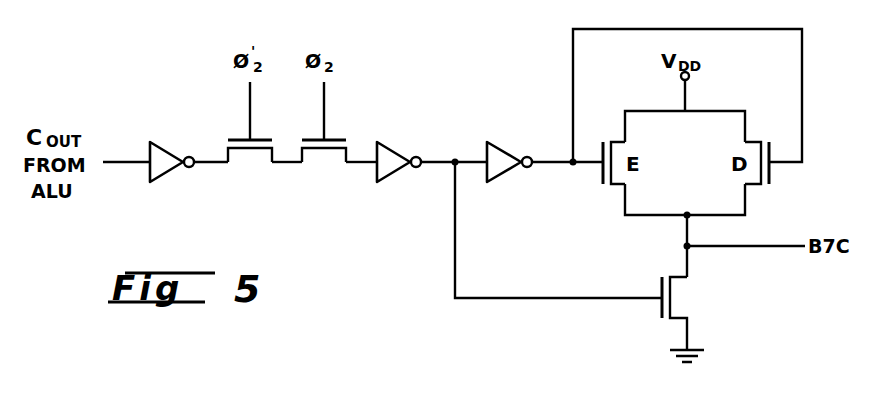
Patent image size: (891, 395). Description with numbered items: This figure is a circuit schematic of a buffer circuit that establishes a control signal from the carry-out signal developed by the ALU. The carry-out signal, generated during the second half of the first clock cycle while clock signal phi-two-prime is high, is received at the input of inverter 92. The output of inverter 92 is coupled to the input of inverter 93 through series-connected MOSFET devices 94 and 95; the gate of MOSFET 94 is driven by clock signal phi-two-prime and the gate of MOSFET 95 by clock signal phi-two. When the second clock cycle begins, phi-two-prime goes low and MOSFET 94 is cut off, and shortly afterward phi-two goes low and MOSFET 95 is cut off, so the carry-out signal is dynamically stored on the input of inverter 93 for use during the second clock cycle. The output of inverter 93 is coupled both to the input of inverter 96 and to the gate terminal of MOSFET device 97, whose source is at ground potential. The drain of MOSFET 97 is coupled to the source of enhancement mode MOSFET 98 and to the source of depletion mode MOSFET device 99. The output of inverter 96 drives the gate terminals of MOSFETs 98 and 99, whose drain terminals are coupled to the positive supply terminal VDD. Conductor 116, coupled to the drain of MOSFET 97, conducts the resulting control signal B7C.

The inverter 92 is at (165, 143).
The inverter 93 is at (392, 145).
The MOSFET device 94 is at (250, 157).
The MOSFET device 95 is at (324, 157).
The inverter 96 is at (502, 145).
The MOSFET device 97 is at (680, 297).
The enhancement mode MOSFET 98 is at (617, 188).
The depletion mode MOSFET device 99 is at (763, 189).
The conductor 116 is at (775, 249).